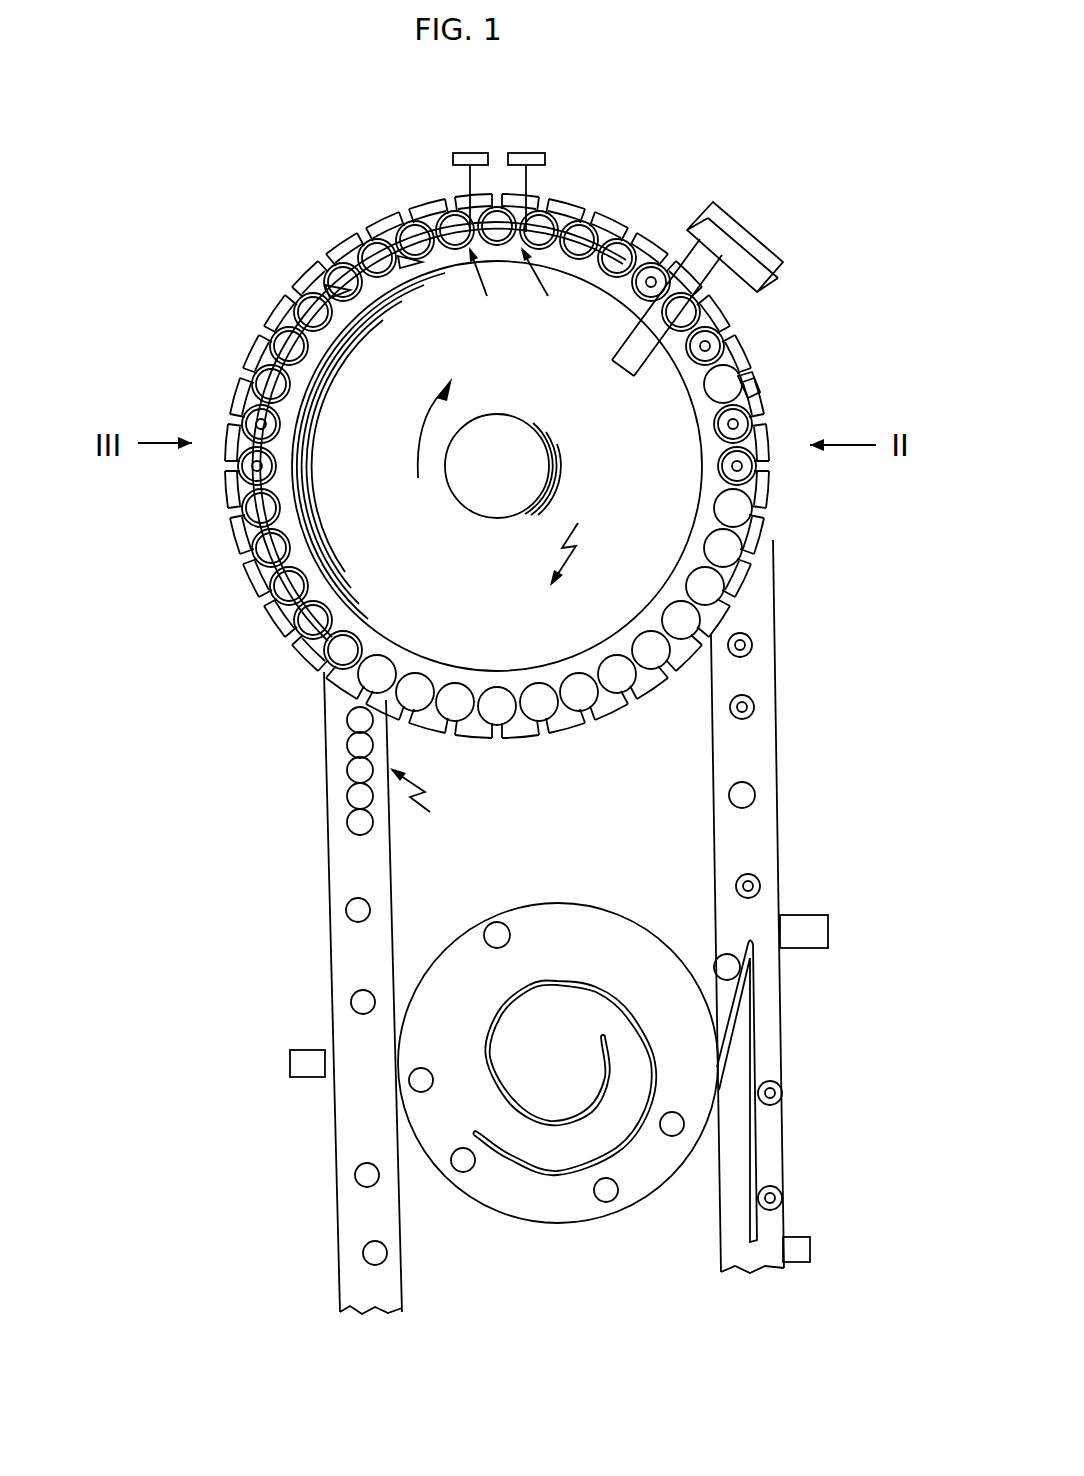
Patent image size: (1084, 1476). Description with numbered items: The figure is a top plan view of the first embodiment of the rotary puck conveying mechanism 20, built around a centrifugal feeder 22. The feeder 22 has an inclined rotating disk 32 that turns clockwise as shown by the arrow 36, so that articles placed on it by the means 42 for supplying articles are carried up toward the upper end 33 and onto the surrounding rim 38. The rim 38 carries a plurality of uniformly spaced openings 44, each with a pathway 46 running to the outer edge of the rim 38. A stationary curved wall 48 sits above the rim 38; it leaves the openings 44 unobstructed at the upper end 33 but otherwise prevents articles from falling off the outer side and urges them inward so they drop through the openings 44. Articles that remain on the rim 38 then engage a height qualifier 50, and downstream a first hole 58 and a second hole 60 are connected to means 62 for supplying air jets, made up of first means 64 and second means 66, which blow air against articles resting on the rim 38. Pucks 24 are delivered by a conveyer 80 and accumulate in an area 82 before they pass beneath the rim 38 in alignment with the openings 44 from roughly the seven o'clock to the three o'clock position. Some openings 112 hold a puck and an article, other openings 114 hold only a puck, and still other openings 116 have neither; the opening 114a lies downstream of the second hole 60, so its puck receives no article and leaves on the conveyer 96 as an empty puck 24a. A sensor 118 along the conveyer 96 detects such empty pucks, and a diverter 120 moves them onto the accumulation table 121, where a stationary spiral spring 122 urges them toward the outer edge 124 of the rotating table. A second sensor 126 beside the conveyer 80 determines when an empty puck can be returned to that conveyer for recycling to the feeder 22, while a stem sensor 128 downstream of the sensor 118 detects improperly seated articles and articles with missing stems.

The rotary conveying mechanism 20 is at (262, 292).
The centrifugal feeder 22 is at (608, 461).
The pucks 24 is at (443, 212).
The empty puck 24a is at (757, 797).
The rotating disk 32 is at (584, 549).
The upper end 33 is at (302, 512).
The arrow 36 is at (418, 440).
The rim 38 is at (482, 687).
The means for supplying articles 42 is at (755, 235).
The openings 44 is at (338, 322).
The pathways 46 is at (593, 210).
The curved wall 48 is at (255, 390).
The height qualifier 50 is at (418, 270).
The first hole 58 is at (488, 283).
The second hole 60 is at (544, 283).
The means for supplying air jets 62 is at (550, 148).
The first means for supplying an air jet 64 is at (452, 160).
The second means for supplying an air jet 66 is at (545, 159).
The conveyer 80 is at (347, 1135).
The accumulation area 82 is at (425, 798).
The conveyer 96 is at (760, 852).
The openings with puck and article 112 is at (325, 285).
The openings with puck only 114 is at (370, 253).
The opening with empty puck 114a is at (720, 373).
The openings with no puck or article 116 is at (643, 640).
The sensor 118 is at (818, 935).
The diverter 120 is at (765, 1022).
The accumulation table 121 is at (568, 1222).
The spiral spring 122 is at (565, 985).
The outer edge 124 is at (628, 1208).
The second sensor 126 is at (288, 1068).
The stem sensor 128 is at (803, 1250).